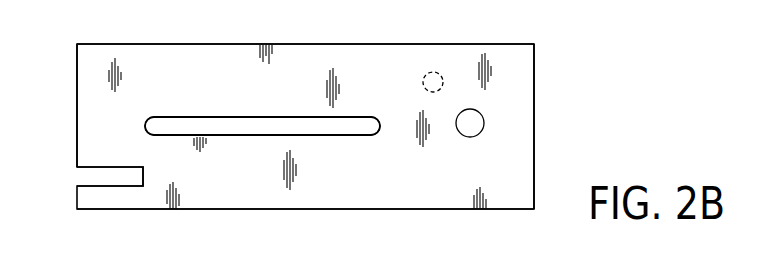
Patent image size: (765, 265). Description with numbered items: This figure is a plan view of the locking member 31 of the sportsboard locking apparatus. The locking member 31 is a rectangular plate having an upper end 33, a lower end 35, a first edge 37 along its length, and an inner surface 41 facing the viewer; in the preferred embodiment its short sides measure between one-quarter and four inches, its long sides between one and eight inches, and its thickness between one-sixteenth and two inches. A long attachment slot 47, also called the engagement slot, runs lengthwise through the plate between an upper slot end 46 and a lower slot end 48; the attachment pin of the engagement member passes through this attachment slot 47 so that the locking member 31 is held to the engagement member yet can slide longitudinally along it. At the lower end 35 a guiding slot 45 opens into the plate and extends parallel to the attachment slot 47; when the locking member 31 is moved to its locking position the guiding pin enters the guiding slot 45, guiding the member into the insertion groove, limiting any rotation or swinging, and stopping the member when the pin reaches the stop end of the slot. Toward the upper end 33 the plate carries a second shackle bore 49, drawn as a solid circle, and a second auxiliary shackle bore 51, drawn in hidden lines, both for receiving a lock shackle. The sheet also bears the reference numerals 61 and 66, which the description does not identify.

The locking member 31 is at (372, 175).
The upper end 33 is at (534, 155).
The lower end 35 is at (77, 130).
The first edge 37 is at (100, 210).
The inner surface 41 is at (513, 62).
The guiding slot 45 is at (92, 179).
The upper slot end 46 is at (374, 116).
The attachment slot 47 is at (218, 122).
The lower slot end 48 is at (150, 115).
The second shackle bore 49 is at (476, 118).
The second auxiliary shackle bore 51 is at (437, 74).
The element 61 is at (408, 264).
The element 66 is at (485, 258).